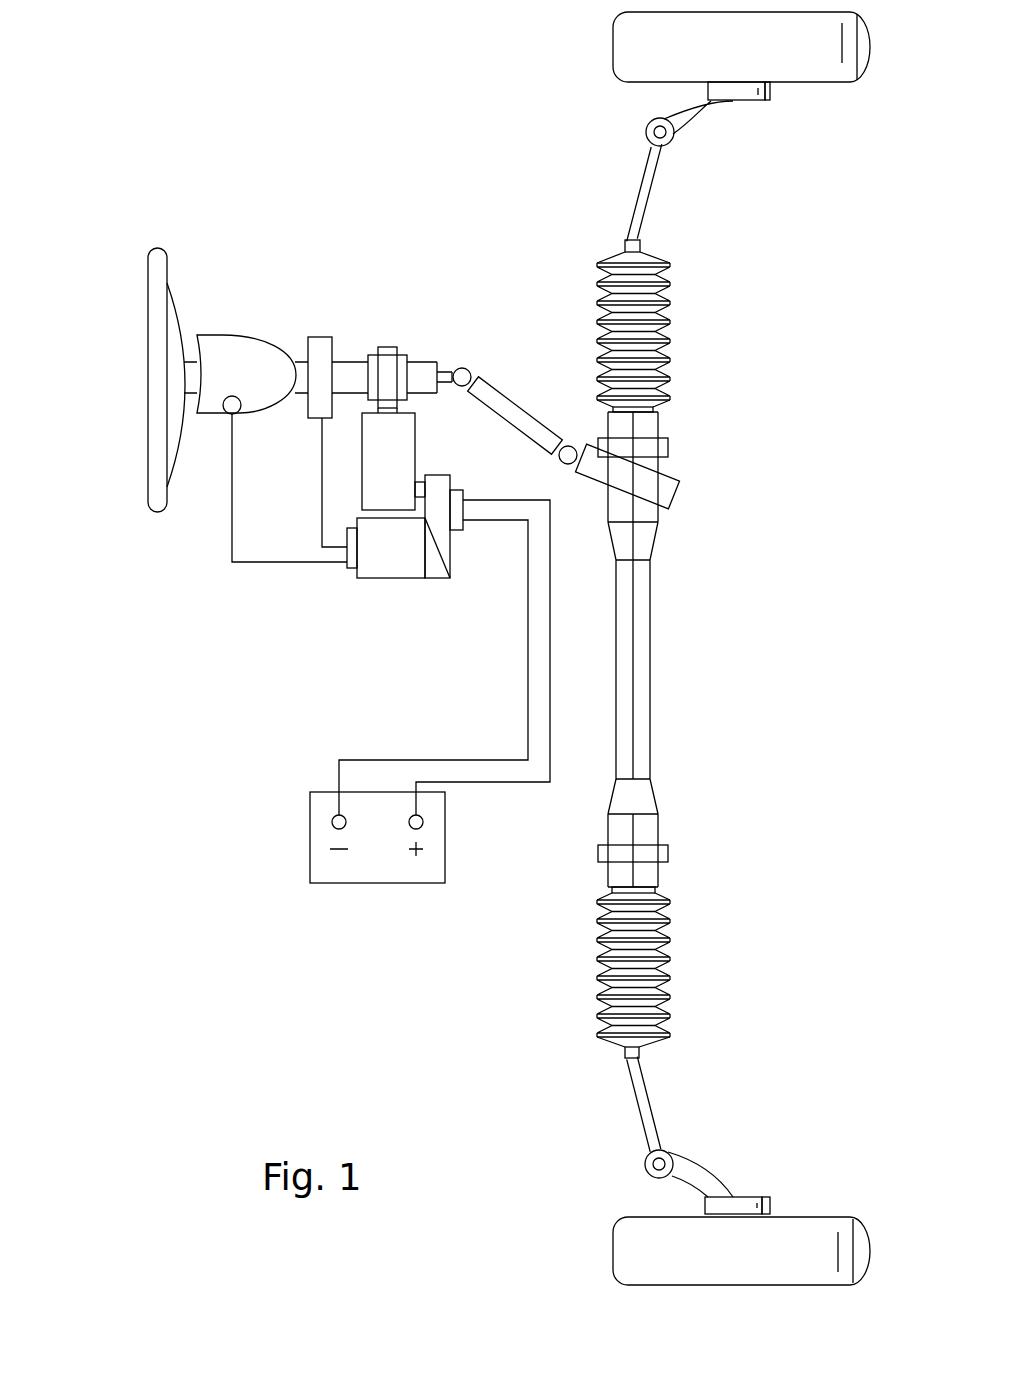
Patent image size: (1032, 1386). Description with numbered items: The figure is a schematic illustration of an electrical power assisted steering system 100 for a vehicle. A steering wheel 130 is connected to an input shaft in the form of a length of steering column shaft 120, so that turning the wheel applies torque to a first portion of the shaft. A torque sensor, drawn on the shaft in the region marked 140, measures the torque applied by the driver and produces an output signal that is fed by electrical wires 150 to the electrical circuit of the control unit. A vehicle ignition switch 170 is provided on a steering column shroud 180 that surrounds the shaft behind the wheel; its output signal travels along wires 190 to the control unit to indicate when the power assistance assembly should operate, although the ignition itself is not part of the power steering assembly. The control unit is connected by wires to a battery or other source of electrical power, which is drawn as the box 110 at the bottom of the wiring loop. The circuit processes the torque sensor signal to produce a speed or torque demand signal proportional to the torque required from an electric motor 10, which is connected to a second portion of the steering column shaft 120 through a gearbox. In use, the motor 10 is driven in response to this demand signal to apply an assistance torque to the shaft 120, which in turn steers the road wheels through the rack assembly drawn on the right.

The electrical power assisted steering system 100 is at (455, 210).
The steering wheel 130 is at (178, 302).
The steering column shaft 120 is at (300, 360).
The torque sensor 140 is at (322, 348).
The steering column shroud 180 is at (265, 411).
The vehicle ignition switch 170 is at (226, 412).
The wires 190 is at (232, 543).
The electrical wires 150 is at (322, 508).
The electric motor 10 is at (397, 457).
The power supply 110 is at (422, 872).